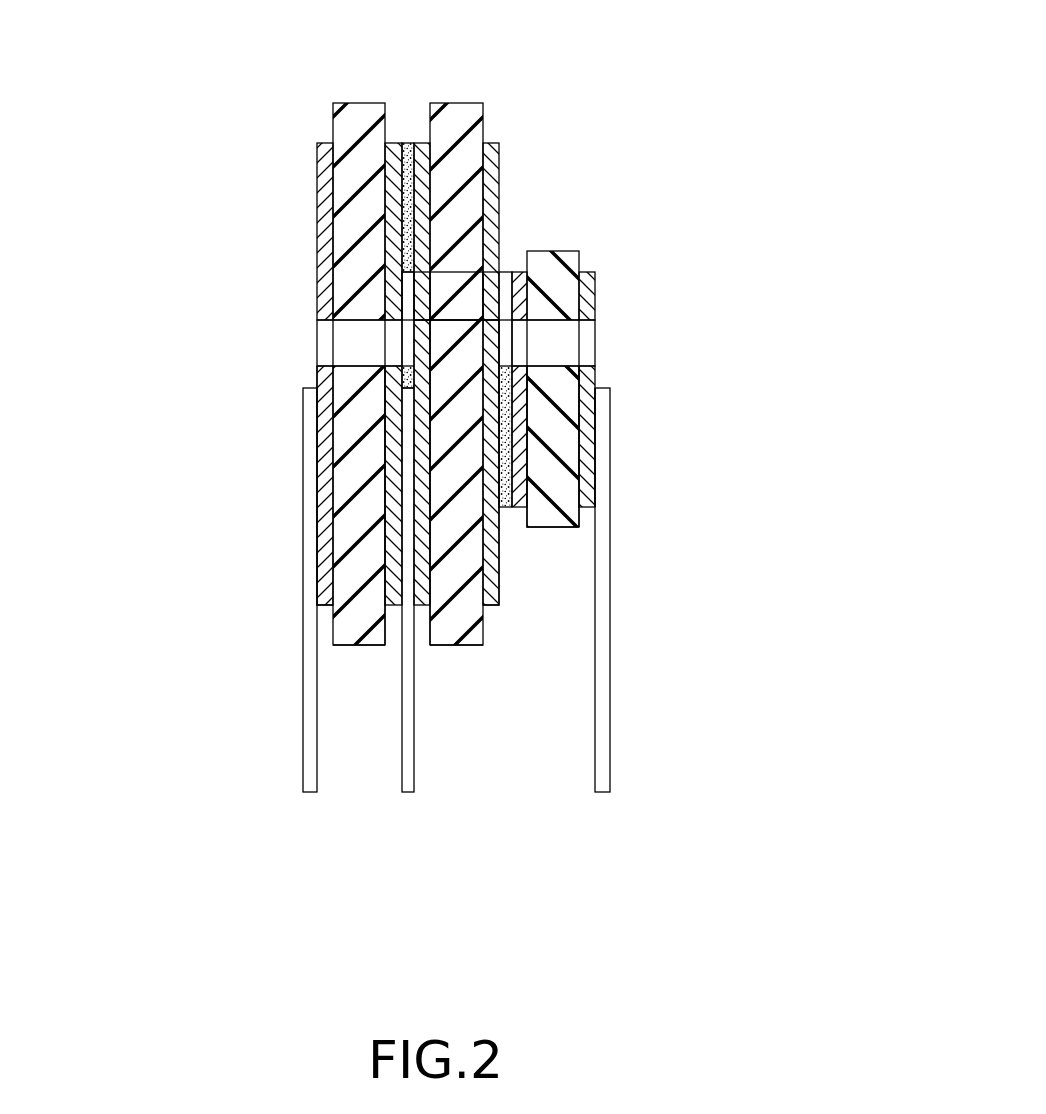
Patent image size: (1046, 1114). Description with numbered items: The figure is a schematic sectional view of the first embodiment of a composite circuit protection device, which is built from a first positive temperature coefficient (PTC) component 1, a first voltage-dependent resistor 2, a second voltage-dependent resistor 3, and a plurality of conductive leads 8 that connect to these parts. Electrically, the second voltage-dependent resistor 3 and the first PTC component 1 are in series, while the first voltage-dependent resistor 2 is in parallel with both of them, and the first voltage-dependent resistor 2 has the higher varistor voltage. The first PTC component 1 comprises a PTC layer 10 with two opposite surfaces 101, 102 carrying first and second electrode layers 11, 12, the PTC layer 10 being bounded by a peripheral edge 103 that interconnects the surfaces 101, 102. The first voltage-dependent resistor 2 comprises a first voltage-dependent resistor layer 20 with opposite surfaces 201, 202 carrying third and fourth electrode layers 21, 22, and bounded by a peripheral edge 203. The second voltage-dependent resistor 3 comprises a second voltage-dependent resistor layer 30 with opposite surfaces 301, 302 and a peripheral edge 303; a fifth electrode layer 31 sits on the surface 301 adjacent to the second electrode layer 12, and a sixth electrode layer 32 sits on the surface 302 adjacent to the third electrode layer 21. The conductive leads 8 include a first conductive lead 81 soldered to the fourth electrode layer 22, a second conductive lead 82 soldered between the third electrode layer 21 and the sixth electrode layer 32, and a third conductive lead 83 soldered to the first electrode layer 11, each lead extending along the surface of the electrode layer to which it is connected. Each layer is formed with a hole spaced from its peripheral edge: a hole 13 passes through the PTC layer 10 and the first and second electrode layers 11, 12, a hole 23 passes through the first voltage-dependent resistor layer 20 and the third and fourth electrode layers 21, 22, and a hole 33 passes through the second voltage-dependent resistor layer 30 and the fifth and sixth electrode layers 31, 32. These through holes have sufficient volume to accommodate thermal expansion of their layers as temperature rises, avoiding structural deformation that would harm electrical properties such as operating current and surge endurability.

The first positive temperature coefficient component 1 is at (624, 264).
The PTC layer 10 is at (553, 263).
The first electrode layer 11 is at (597, 433).
The second electrode layer 12 is at (517, 485).
The hole 13 is at (557, 352).
The surface 101 is at (583, 483).
The surface 102 is at (530, 488).
The peripheral edge 103 is at (552, 470).
The first voltage-dependent resistor 2 is at (301, 128).
The first voltage-dependent resistor layer 20 is at (353, 110).
The third electrode layer 21 is at (390, 158).
The fourth electrode layer 22 is at (328, 197).
The hole 23 is at (348, 347).
The surface 201 is at (382, 458).
The surface 202 is at (325, 527).
The peripheral edge 203 is at (353, 493).
The second voltage-dependent resistor 3 is at (508, 128).
The second voltage-dependent resistor layer 30 is at (448, 115).
The fifth electrode layer 31 is at (488, 158).
The sixth electrode layer 32 is at (410, 155).
The hole 33 is at (443, 292).
The surface 301 is at (485, 588).
The surface 302 is at (435, 585).
The peripheral edge 303 is at (465, 602).
The conductive leads 8 is at (312, 893).
The first conductive lead 81 is at (308, 783).
The second conductive lead 82 is at (405, 783).
The third conductive lead 83 is at (600, 783).